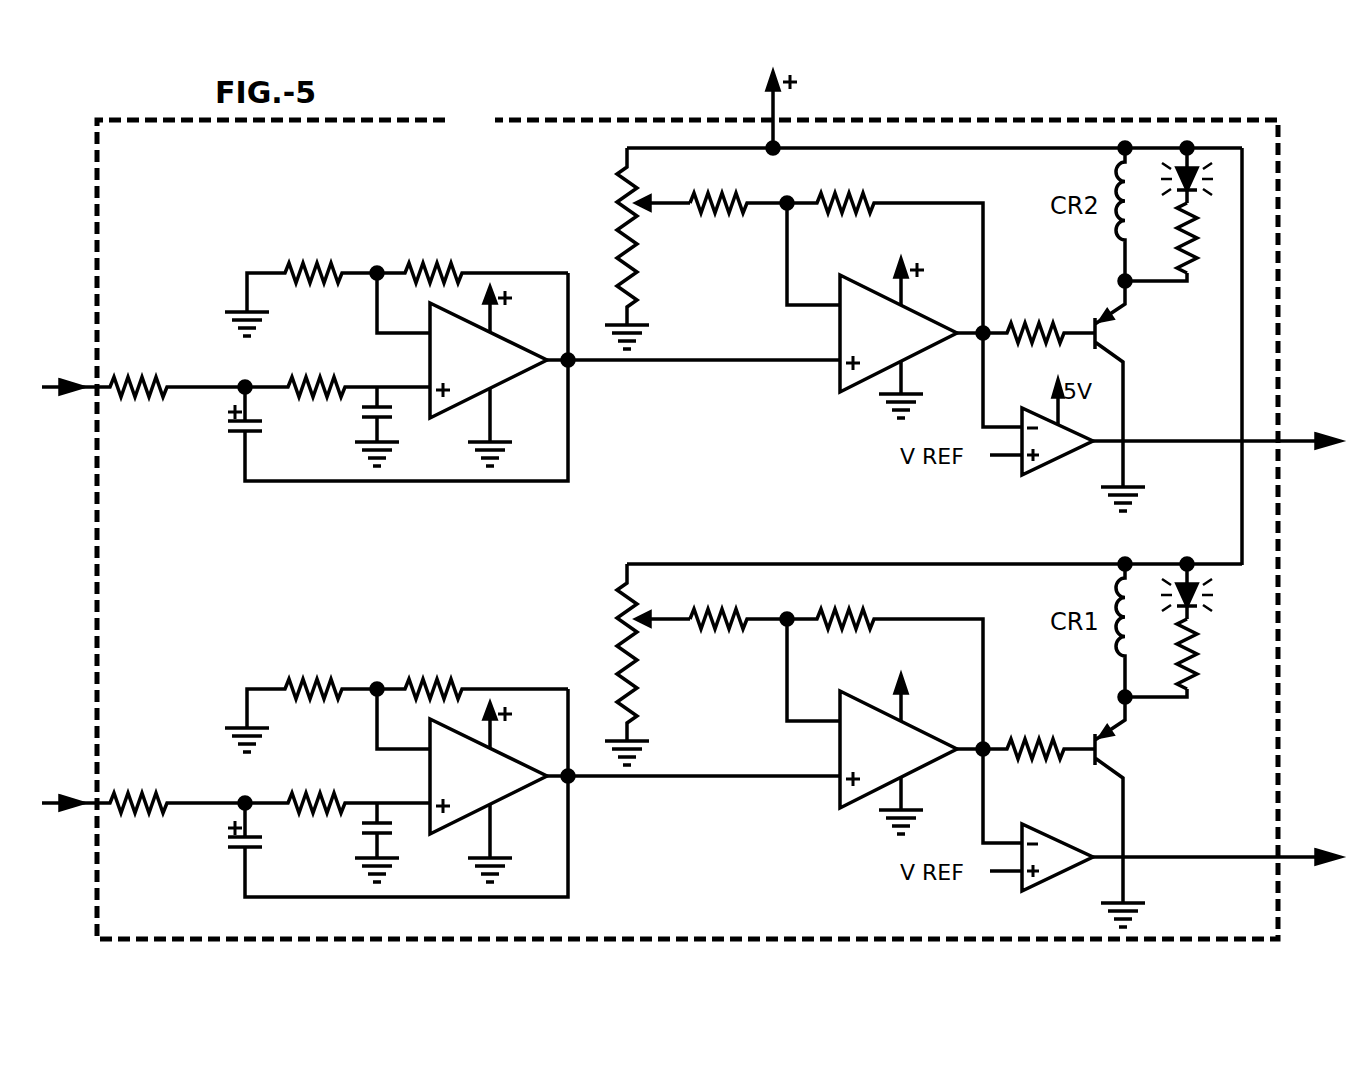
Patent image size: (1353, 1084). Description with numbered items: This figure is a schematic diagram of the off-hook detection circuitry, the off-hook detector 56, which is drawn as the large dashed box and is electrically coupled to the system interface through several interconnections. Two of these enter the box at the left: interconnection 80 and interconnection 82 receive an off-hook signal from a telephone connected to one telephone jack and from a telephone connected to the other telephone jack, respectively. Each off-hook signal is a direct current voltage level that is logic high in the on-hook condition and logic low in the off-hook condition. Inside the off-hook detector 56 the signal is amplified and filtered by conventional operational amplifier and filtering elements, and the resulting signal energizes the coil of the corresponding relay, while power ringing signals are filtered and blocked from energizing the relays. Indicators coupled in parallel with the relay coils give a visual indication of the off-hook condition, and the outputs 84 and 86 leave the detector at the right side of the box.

The off-hook detector 56 is at (687, 524).
The interconnection 80 is at (45, 805).
The interconnection 82 is at (45, 389).
The first relay output 84 is at (1222, 459).
The second relay output 86 is at (1222, 875).